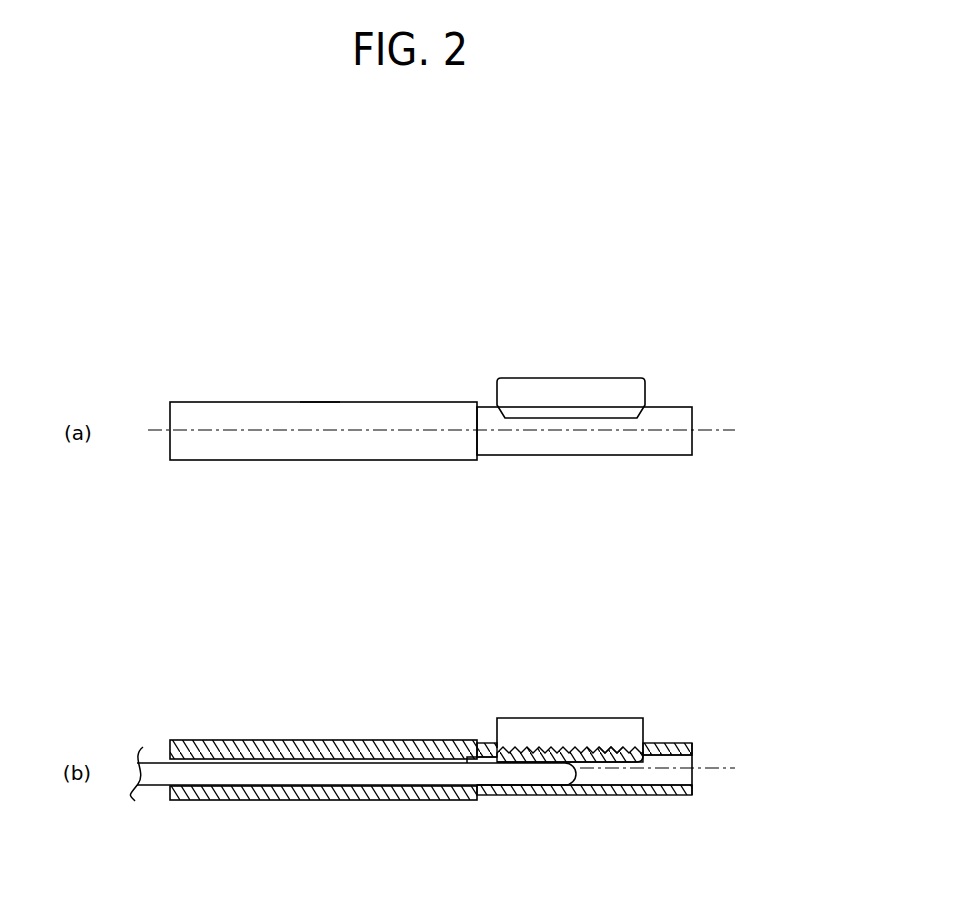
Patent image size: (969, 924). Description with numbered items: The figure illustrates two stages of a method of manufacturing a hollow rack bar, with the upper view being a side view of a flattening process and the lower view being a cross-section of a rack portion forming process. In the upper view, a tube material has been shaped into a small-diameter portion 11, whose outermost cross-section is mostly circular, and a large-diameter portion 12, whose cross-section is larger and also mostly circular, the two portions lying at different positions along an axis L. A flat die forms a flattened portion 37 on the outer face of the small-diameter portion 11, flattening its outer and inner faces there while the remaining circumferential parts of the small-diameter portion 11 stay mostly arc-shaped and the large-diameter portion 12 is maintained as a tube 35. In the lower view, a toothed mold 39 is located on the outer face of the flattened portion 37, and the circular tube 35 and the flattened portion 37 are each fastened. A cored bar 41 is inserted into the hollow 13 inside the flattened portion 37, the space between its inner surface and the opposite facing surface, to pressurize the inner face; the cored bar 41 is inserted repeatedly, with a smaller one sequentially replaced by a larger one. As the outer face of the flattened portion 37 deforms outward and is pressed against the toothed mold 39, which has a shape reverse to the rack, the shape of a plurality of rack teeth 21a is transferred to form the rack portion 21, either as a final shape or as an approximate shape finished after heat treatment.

The small-diameter portion 11 is at (664, 407).
The large-diameter portion 12 is at (247, 400).
The hollow 13 is at (670, 778).
The rack portion 21 is at (515, 742).
The rack teeth 21a is at (604, 747).
The tube 35 is at (325, 392).
The flattened portion 37 is at (581, 416).
The toothed mold 39 is at (562, 718).
The cored bar 41 is at (466, 757).
The axis L is at (710, 430).